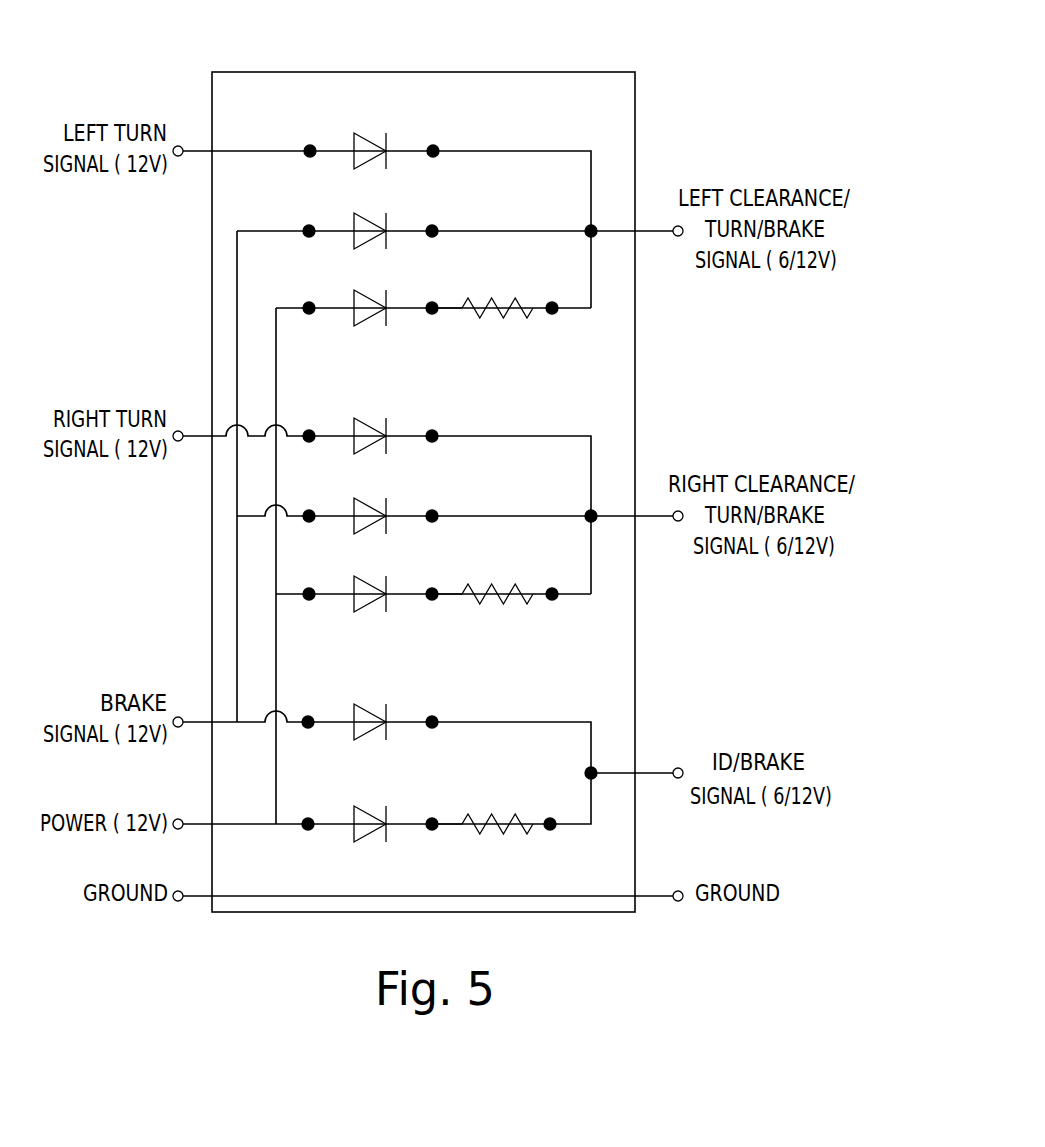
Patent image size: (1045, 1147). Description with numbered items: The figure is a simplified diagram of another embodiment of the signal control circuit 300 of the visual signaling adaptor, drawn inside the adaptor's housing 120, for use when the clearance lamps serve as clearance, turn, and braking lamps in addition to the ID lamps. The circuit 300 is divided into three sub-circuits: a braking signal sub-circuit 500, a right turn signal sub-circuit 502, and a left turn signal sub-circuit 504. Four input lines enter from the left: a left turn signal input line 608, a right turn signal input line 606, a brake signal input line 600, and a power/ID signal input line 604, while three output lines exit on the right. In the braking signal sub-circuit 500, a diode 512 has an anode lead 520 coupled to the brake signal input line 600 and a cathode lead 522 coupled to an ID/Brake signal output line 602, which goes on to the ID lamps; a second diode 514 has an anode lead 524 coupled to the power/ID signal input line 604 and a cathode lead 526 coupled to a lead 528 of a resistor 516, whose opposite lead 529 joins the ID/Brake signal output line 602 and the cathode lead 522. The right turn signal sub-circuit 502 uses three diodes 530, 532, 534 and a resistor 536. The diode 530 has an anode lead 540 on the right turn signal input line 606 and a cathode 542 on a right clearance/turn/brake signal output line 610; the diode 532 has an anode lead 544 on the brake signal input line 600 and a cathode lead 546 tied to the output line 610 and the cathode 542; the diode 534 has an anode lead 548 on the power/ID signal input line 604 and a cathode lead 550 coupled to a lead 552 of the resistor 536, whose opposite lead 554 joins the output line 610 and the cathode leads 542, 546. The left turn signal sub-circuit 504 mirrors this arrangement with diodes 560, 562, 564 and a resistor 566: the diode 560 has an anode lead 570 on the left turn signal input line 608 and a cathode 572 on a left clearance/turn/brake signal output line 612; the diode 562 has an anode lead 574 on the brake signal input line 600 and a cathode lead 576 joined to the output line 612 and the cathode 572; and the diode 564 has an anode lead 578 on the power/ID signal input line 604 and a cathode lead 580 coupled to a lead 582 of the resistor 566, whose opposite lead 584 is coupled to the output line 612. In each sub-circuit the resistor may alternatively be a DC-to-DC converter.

The housing 120 is at (537, 70).
The signal control circuit 300 is at (608, 87).
The braking signal sub-circuit 500 is at (615, 693).
The right turn signal sub-circuit 502 is at (615, 413).
The left turn signal sub-circuit 504 is at (618, 107).
The diode 512 is at (368, 704).
The diode 514 is at (368, 806).
The resistor 516 is at (527, 820).
The anode lead 520 is at (337, 724).
The cathode lead 522 is at (408, 724).
The anode lead 524 is at (337, 826).
The cathode lead 526 is at (408, 826).
The lead 528 is at (452, 822).
The opposite lead 529 is at (538, 826).
The diode 530 is at (368, 418).
The diode 532 is at (368, 498).
The diode 534 is at (368, 576).
The resistor 536 is at (527, 588).
The anode lead 540 is at (337, 438).
The cathode 542 is at (408, 435).
The anode lead 544 is at (337, 518).
The cathode lead 546 is at (408, 515).
The anode lead 548 is at (337, 596).
The cathode lead 550 is at (408, 597).
The lead 552 is at (452, 592).
The opposite lead 554 is at (572, 596).
The diode 560 is at (368, 132).
The diode 562 is at (368, 212).
The diode 564 is at (368, 290).
The resistor 566 is at (527, 302).
The anode lead 570 is at (338, 153).
The cathode 572 is at (408, 150).
The anode lead 574 is at (337, 233).
The cathode lead 576 is at (408, 230).
The anode lead 578 is at (337, 310).
The cathode lead 580 is at (408, 307).
The lead 582 is at (452, 305).
The opposite lead 584 is at (572, 311).
The brake signal input line 600 is at (197, 720).
The ID/Brake signal output line 602 is at (650, 771).
The power/ID signal input line 604 is at (197, 822).
The right turn signal input line 606 is at (199, 434).
The left turn signal input line 608 is at (198, 149).
The right clearance/turn/brake signal output line 610 is at (650, 514).
The left clearance/turn/brake signal output line 612 is at (650, 229).